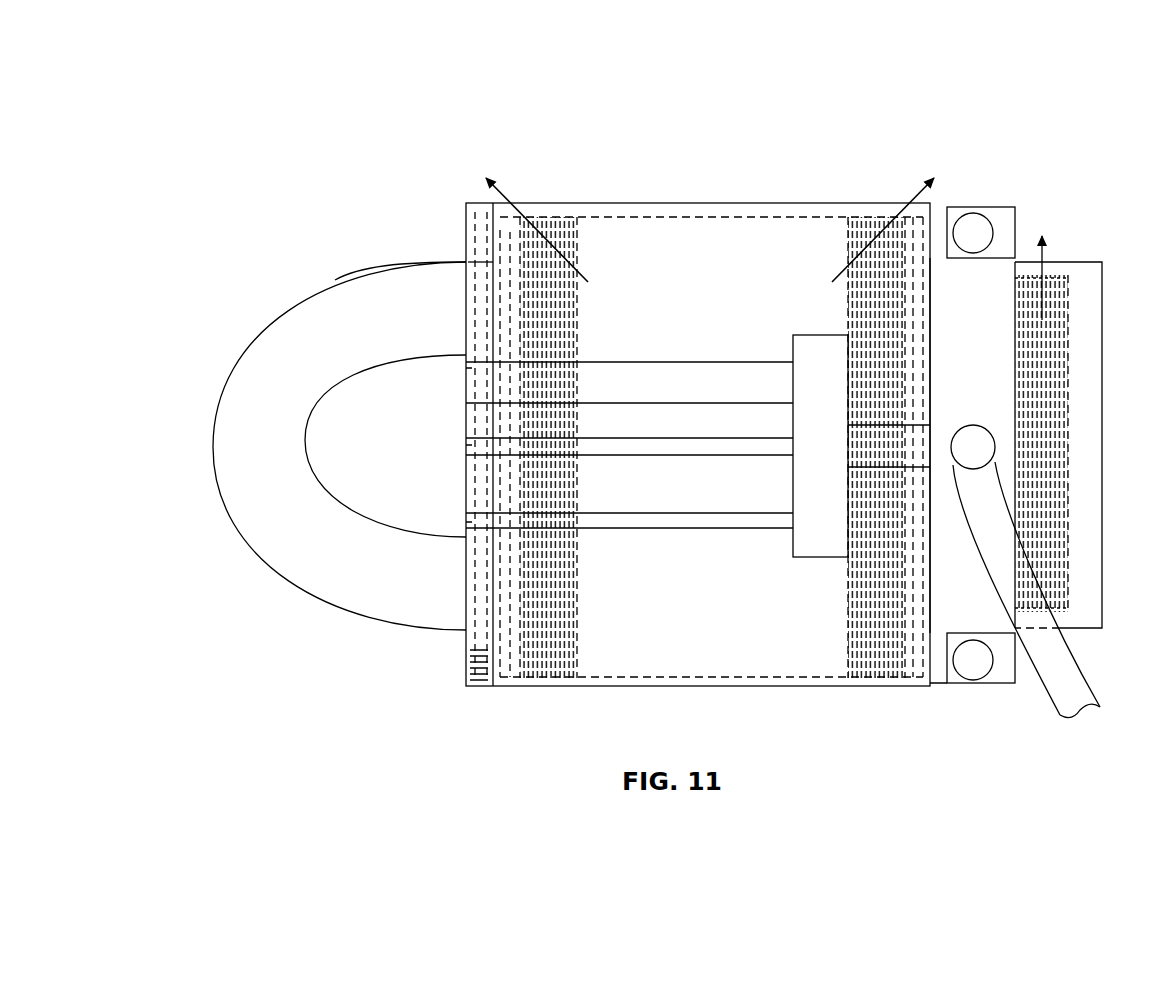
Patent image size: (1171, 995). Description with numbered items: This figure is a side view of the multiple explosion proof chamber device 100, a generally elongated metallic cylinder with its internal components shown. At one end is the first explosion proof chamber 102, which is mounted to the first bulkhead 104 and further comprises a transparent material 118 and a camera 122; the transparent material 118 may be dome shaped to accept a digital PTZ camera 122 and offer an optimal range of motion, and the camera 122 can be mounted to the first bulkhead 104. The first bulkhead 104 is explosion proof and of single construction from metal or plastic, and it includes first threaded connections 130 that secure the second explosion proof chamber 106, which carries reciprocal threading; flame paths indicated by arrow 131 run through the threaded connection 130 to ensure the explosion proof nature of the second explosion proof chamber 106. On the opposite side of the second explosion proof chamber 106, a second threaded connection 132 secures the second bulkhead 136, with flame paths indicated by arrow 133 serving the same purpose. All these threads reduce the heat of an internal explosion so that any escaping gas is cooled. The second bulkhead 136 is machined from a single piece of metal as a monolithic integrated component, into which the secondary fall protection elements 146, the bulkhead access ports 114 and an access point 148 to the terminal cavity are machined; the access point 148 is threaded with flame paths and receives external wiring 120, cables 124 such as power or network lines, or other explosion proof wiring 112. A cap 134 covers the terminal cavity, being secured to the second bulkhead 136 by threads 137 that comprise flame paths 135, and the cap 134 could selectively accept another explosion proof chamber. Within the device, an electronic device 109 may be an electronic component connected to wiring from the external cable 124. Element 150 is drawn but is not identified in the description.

The multiple explosion proof chamber device 100 is at (260, 62).
The first explosion proof chamber 102 is at (335, 293).
The first bulkhead 104 is at (478, 242).
The second explosion proof chamber 106 is at (710, 222).
The electronic device 109 is at (820, 553).
The explosion proof wiring 112 is at (638, 445).
The bulkhead access ports 114 is at (466, 368).
The transparent material 118 is at (243, 350).
The external wiring 120 is at (665, 520).
The camera 122 is at (373, 505).
The cables 124 is at (660, 375).
The first threaded connections 130 is at (545, 233).
The arrow indicating flame paths 131 is at (500, 195).
The second threaded connection 132 is at (865, 235).
The arrow indicating flame paths 133 is at (920, 195).
The cap 134 is at (1085, 467).
The flame paths 135 is at (1048, 262).
The second bulkhead 136 is at (932, 688).
The threads 137 is at (1058, 303).
The secondary fall protection elements 146 is at (975, 237).
The access point 148 is at (973, 447).
The fan grille 150 is at (1063, 338).